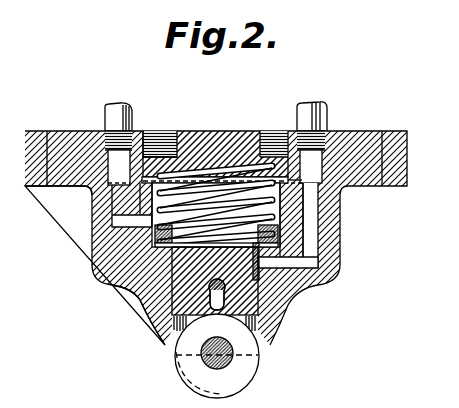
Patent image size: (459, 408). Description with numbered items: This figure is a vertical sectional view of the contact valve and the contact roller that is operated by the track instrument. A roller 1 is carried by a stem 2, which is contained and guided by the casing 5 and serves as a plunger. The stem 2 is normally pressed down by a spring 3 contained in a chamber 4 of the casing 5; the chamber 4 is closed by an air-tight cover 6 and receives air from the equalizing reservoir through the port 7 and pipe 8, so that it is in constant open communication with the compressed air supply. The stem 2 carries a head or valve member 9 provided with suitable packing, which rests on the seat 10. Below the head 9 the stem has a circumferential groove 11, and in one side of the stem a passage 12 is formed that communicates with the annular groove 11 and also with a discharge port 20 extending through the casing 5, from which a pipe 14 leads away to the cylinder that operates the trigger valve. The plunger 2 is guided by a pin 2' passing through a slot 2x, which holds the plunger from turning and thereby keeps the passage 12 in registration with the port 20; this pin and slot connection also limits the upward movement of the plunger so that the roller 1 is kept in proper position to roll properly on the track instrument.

The roller 1 is at (242, 371).
The stem 2 is at (241, 301).
The pin 2' is at (201, 280).
The slot 2x is at (226, 300).
The spring 3 is at (257, 208).
The chamber 4 is at (275, 193).
The casing 5 is at (108, 266).
The air-tight cover 6 is at (172, 157).
The port 7 is at (88, 190).
The pipe 8 is at (110, 116).
The head or valve member 9 is at (166, 228).
The seat 10 is at (136, 288).
The circumferential groove 11 is at (152, 293).
The passage 12 is at (258, 283).
The pipe 14 is at (312, 127).
The discharge port 20 is at (312, 242).